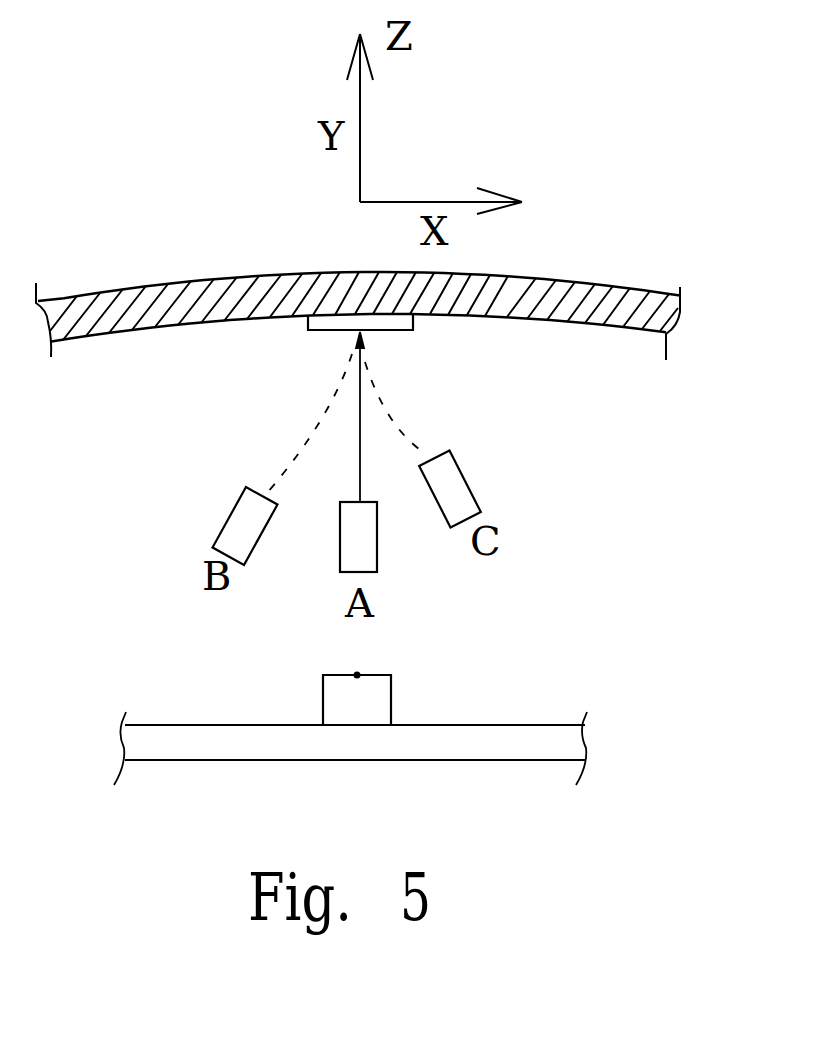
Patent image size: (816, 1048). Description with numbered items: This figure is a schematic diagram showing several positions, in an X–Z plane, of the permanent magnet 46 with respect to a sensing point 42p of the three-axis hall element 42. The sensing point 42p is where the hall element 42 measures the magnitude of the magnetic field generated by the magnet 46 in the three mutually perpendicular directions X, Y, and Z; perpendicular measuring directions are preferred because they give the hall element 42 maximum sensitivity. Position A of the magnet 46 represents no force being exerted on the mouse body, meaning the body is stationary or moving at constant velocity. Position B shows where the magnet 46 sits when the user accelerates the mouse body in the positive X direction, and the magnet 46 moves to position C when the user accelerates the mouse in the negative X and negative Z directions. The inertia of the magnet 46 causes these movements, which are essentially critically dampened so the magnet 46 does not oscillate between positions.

The three-axis hall element 42 is at (382, 702).
The sensing point 42p is at (357, 675).
The permanent magnet 46 is at (377, 563).